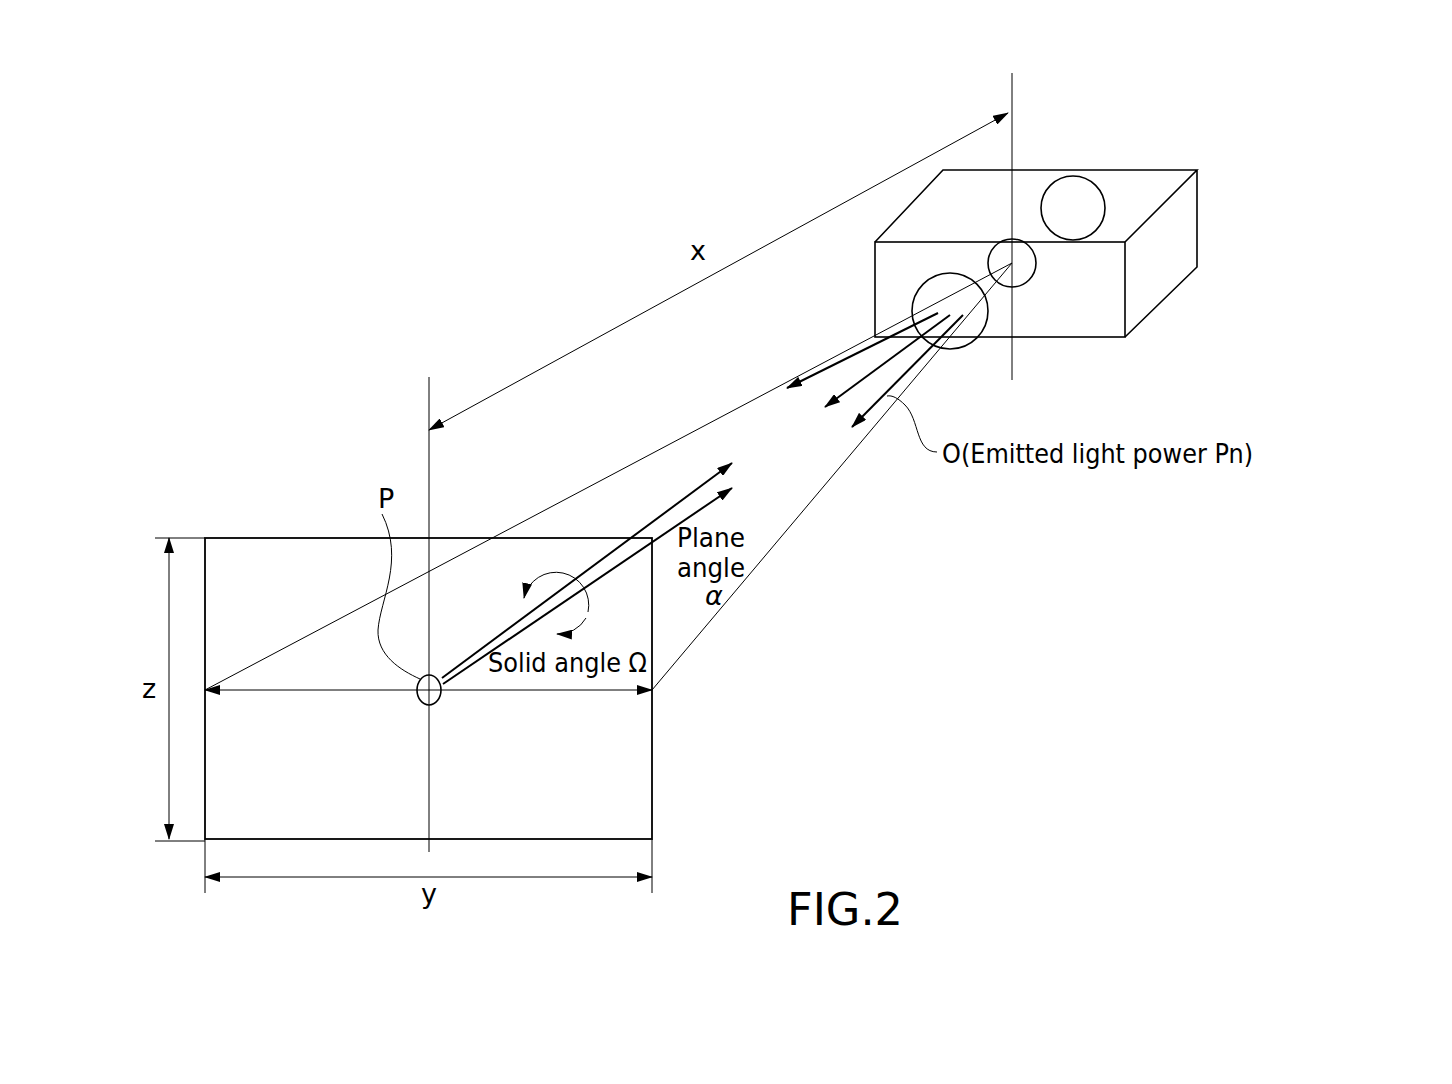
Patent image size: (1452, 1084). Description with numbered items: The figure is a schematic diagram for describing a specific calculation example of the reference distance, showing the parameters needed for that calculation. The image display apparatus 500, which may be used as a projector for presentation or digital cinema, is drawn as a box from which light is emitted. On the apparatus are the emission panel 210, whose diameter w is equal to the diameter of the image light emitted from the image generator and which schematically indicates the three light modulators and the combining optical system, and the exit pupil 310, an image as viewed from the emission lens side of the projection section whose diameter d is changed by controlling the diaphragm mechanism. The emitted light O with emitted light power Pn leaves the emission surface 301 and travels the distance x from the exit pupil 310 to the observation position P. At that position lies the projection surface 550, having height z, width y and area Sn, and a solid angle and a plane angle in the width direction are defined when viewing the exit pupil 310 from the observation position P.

The image display apparatus 500 is at (1144, 157).
The emission panel 210 is at (1105, 213).
The exit pupil 310 is at (1030, 286).
The emission surface 301 is at (975, 344).
The projection surface 550 is at (627, 768).